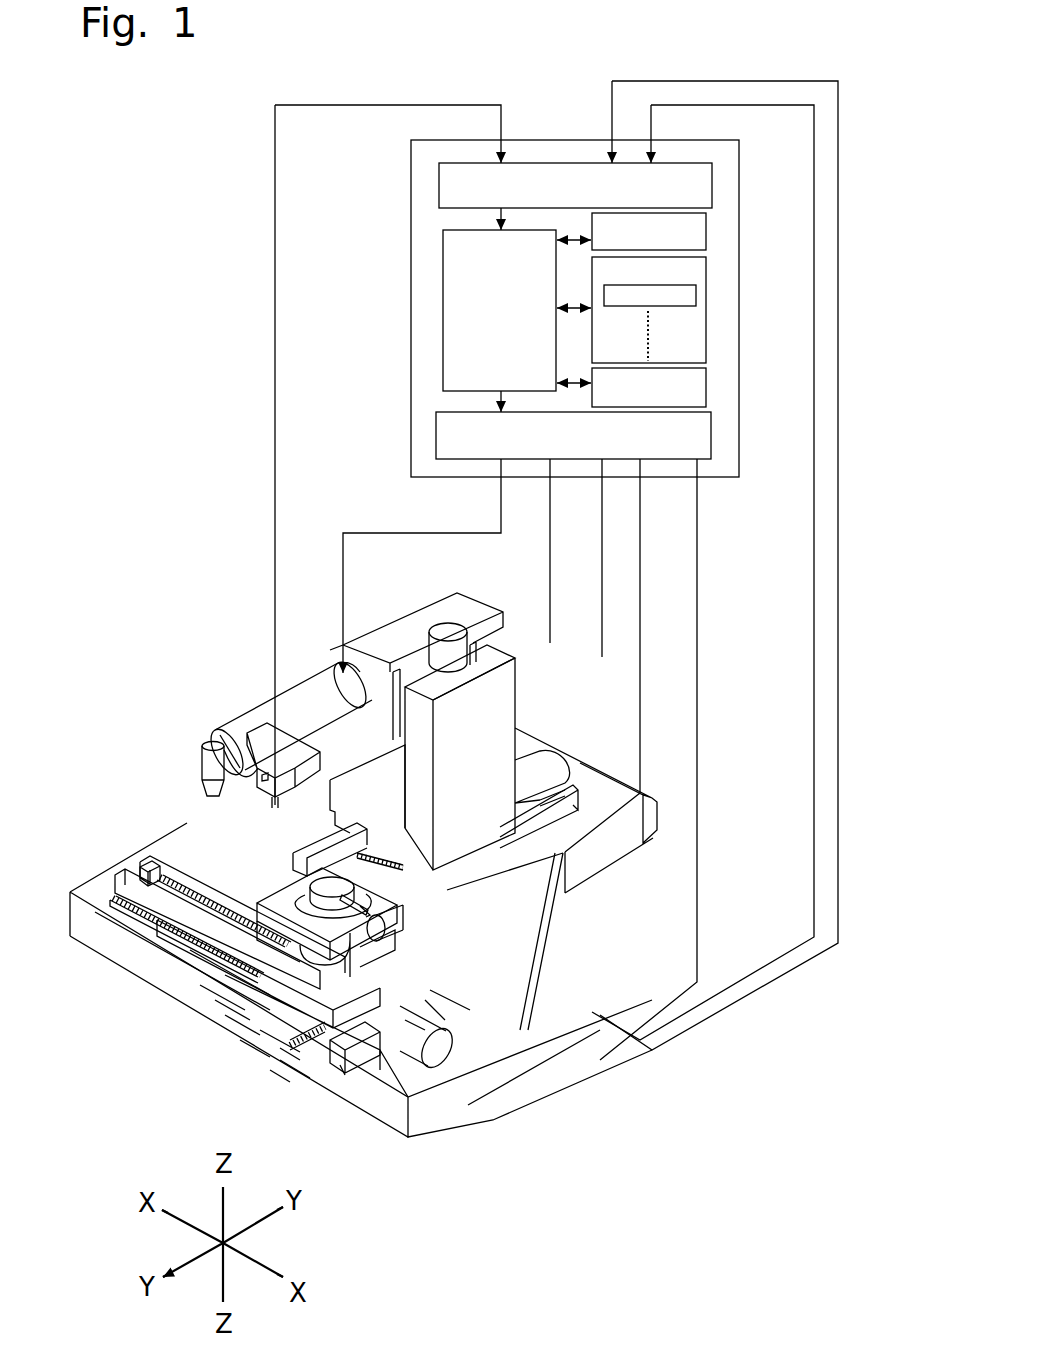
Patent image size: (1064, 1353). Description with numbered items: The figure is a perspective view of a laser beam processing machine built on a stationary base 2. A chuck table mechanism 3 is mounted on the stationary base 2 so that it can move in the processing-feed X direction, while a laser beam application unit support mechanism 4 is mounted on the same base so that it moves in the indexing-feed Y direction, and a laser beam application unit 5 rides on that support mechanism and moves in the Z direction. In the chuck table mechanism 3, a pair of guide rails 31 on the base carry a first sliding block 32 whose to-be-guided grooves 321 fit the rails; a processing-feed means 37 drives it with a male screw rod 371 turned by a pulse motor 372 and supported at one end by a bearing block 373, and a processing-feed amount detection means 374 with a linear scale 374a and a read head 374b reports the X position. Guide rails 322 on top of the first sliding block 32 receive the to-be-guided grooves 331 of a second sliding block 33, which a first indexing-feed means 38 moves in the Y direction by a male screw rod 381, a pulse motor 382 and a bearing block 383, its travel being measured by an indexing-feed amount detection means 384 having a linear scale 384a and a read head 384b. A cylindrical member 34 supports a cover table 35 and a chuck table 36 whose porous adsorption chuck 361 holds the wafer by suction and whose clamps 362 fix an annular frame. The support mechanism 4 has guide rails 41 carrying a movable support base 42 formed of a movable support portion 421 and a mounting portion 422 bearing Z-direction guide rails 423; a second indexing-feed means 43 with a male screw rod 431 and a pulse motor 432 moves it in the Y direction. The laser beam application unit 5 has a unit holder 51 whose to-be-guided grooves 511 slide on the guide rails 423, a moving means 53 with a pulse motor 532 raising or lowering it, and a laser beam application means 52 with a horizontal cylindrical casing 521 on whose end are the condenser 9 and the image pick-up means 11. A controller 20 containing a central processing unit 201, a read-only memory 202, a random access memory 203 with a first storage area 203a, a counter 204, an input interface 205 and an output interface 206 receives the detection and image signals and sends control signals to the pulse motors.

The stationary base 2 is at (590, 980).
The chuck table mechanism 3 is at (525, 1008).
The laser beam application unit support mechanism 4 is at (636, 815).
The laser beam application unit 5 is at (338, 637).
The condenser 9 is at (201, 765).
The image pick-up means 11 is at (258, 807).
The controller 20 is at (549, 139).
The central processing unit (CPU) 201 is at (443, 268).
The read-only memory (ROM) 202 is at (706, 246).
The random access memory (RAM) 203 is at (697, 310).
The first storage area 203a is at (650, 296).
The counter 204 is at (706, 371).
The input interface 205 is at (439, 182).
The output interface 206 is at (436, 434).
The guide rails 31 is at (142, 862).
The first sliding block 32 is at (262, 1000).
The second sliding block 33 is at (400, 975).
The cylindrical member 34 is at (320, 1060).
The cover table 35 is at (400, 908).
The chuck table 36 is at (290, 890).
The processing-feed means 37 is at (360, 1065).
The first indexing-feed means 38 is at (365, 960).
The guide rails 41 is at (322, 850).
The movable support base 42 is at (518, 717).
The second indexing-feed means 43 is at (572, 772).
The unit holder 51 is at (415, 615).
The laser beam application means 52 is at (290, 700).
The moving means 53 is at (442, 613).
The to-be-guided grooves 321 is at (310, 1060).
The guide rails 322 is at (228, 1010).
The to-be-guided grooves 331 is at (200, 960).
The adsorption chuck 361 is at (372, 912).
The clamps 362 is at (300, 880).
The male screw rod 371 is at (175, 952).
The pulse motor 372 is at (445, 1062).
The bearing block 373 is at (140, 870).
The processing-feed amount detection means 374 is at (300, 1080).
The linear scale 374a is at (110, 915).
The read head 374b is at (285, 1085).
The male screw rod 381 is at (215, 995).
The pulse motor 382 is at (400, 945).
The bearing block 383 is at (240, 1025).
The indexing-feed amount detection means 384 is at (430, 1040).
The linear scale 384a is at (410, 1035).
The read head 384b is at (530, 962).
The movable support portion 421 is at (345, 790).
The mounting portion 422 is at (515, 683).
The guide rails 423 is at (395, 640).
The male screw rod 431 is at (372, 850).
The pulse motor 432 is at (566, 763).
The to-be-guided grooves 511 is at (342, 676).
The cylindrical casing 521 is at (258, 682).
The pulse motor 532 is at (455, 628).